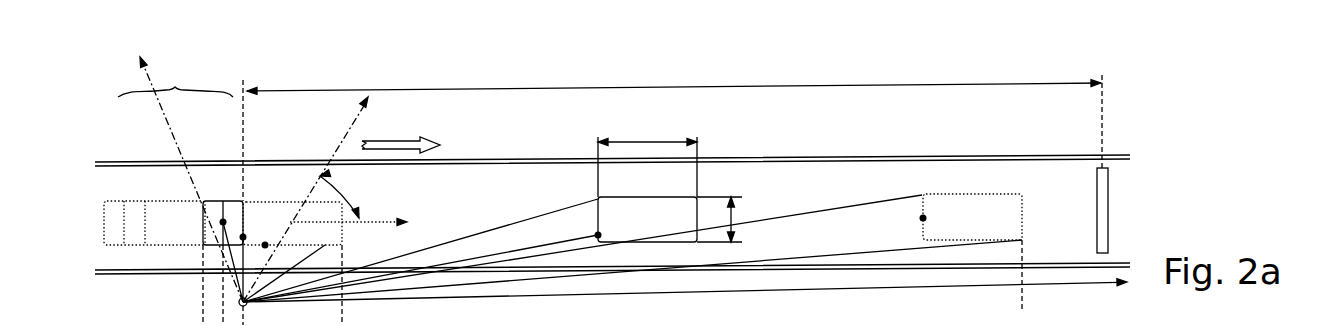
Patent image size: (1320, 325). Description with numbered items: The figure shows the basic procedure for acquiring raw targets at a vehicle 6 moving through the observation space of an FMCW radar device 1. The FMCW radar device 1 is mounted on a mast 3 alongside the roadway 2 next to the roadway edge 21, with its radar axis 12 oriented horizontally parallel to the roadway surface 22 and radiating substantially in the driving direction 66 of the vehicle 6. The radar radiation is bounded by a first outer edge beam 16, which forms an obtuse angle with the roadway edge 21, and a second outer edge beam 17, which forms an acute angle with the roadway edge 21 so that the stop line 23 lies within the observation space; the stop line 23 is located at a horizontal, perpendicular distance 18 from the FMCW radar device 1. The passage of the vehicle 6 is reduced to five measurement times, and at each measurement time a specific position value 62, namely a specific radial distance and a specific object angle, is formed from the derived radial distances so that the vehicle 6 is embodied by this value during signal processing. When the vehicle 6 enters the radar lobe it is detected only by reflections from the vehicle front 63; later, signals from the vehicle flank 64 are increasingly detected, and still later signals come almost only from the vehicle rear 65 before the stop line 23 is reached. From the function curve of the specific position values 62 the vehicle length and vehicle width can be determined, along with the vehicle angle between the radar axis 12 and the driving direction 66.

The FMCW radar device 1 is at (238, 300).
The roadway 2 is at (582, 206).
The roadway surface 22 is at (780, 217).
The mast 3 is at (683, 205).
The vehicle 6 is at (175, 80).
The radar axis 12 is at (340, 140).
The first outer edge beam 16 is at (143, 76).
The second outer edge beam 17 is at (1050, 283).
The horizontal perpendicular distance of the stop line from the FMCW radar device 18 is at (674, 76).
The roadway edge 21 is at (1067, 263).
The stop line 23 is at (1103, 210).
The specific position value 62 is at (598, 235).
The vehicle front 63 is at (207, 219).
The vehicle flank 64 is at (137, 271).
The vehicle rear 65 is at (96, 224).
The driving direction 66 is at (401, 134).